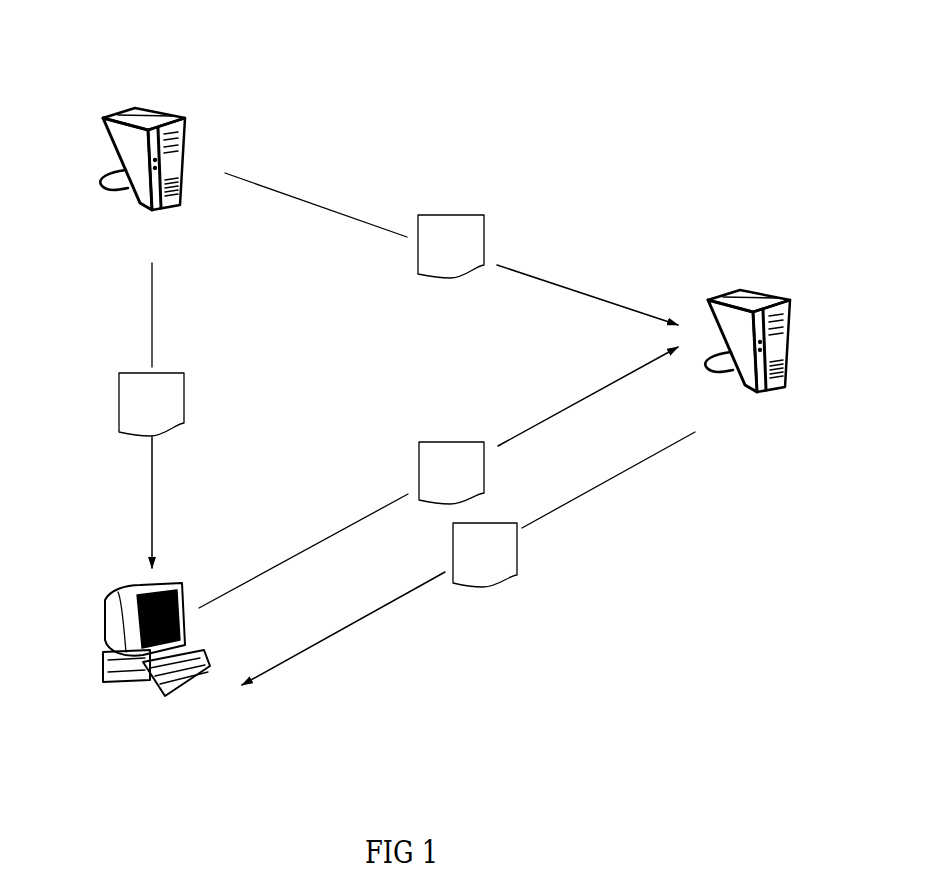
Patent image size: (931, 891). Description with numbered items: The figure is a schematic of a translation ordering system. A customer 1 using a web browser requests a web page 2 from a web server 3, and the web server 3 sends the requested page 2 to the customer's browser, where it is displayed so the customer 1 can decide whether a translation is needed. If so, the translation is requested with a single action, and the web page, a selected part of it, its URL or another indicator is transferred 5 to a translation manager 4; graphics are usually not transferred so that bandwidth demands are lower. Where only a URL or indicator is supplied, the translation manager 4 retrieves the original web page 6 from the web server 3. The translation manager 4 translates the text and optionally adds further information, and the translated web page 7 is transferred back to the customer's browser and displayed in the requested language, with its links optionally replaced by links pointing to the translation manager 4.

The customer 1 is at (197, 670).
The web page 2 is at (119, 394).
The web server 3 is at (183, 118).
The translation manager 4 is at (752, 297).
The transfer of web page or indicator 5 is at (452, 442).
The original web page 6 is at (458, 215).
The translated web page 7 is at (473, 588).